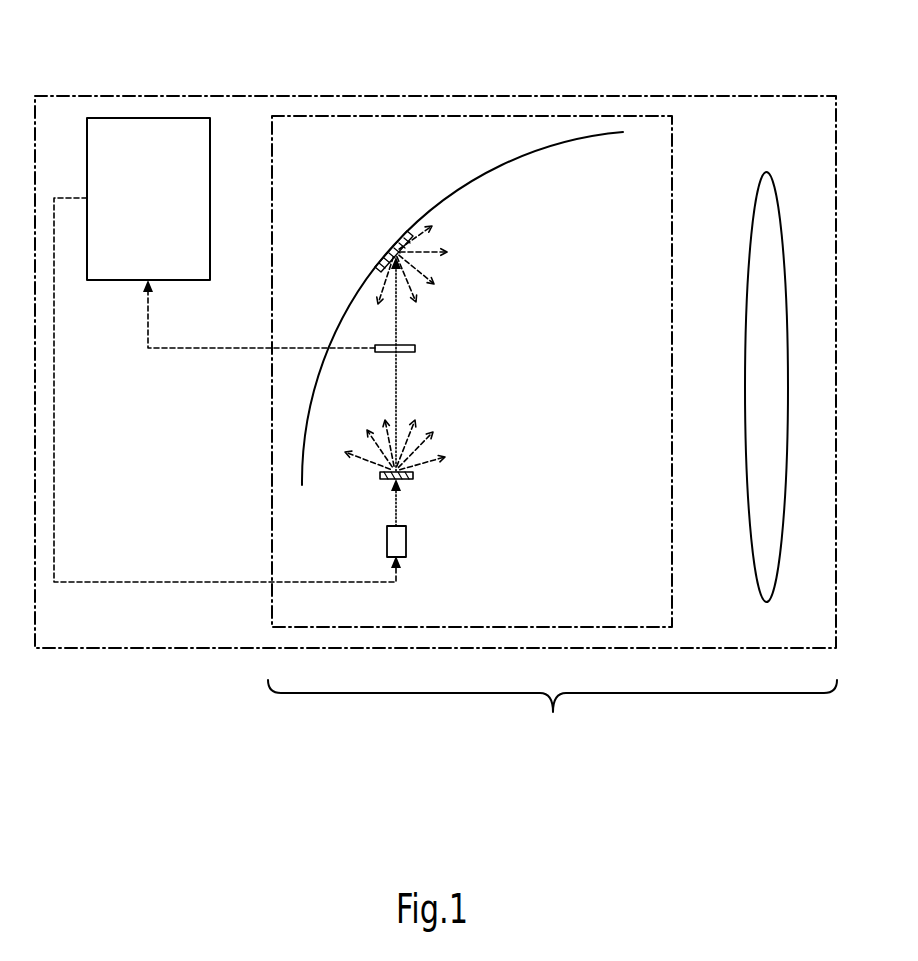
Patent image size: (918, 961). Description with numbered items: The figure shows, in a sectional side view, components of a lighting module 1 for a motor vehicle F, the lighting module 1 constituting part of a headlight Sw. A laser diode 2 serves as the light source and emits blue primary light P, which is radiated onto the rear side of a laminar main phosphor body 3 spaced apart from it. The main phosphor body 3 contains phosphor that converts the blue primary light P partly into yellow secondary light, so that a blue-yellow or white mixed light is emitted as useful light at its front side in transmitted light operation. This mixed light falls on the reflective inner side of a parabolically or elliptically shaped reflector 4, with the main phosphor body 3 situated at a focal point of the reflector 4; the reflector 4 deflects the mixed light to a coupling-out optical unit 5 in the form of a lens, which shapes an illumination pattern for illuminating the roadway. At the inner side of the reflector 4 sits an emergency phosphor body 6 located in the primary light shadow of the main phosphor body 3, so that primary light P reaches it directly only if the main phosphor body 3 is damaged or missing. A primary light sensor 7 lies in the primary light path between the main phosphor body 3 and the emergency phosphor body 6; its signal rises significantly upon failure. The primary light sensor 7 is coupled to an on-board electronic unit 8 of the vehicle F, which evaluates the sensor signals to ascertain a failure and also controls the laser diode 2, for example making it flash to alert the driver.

The lighting module 1 is at (608, 115).
The laser diode 2 is at (406, 540).
The main phosphor body 3 is at (413, 476).
The reflector 4 is at (598, 135).
The coupling-out optical unit 5 is at (767, 172).
The emergency phosphor body 6 is at (389, 247).
The primary light sensor 7 is at (415, 348).
The on-board electronic unit 8 is at (120, 280).
The motor vehicle F is at (362, 95).
The primary light P is at (396, 505).
The headlight Sw is at (552, 713).